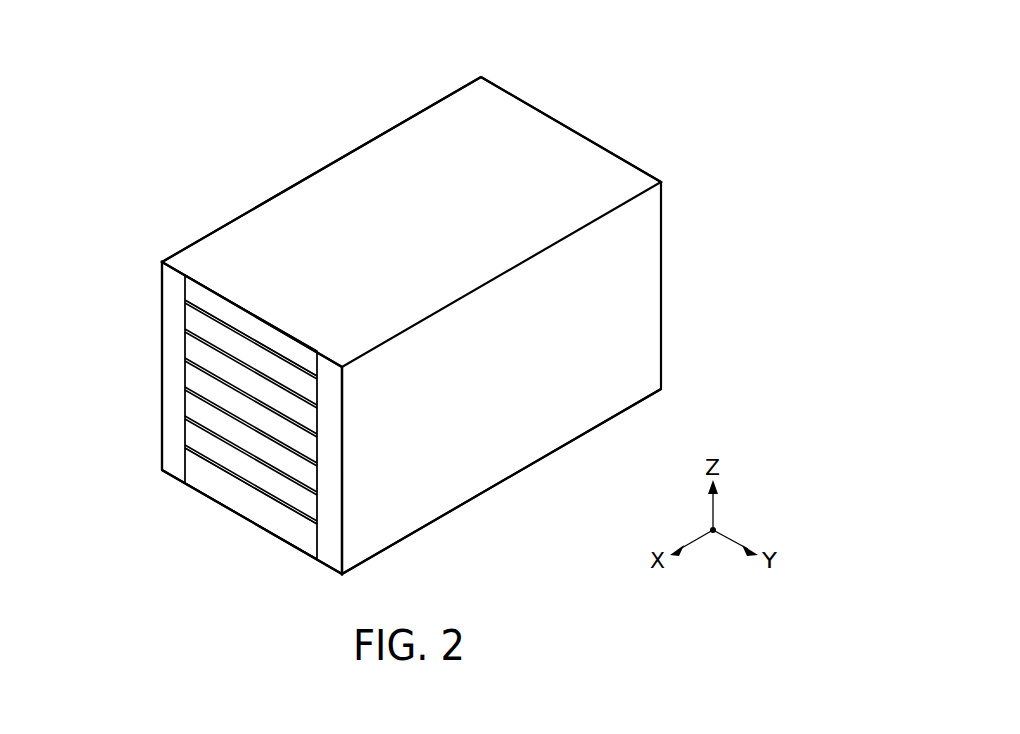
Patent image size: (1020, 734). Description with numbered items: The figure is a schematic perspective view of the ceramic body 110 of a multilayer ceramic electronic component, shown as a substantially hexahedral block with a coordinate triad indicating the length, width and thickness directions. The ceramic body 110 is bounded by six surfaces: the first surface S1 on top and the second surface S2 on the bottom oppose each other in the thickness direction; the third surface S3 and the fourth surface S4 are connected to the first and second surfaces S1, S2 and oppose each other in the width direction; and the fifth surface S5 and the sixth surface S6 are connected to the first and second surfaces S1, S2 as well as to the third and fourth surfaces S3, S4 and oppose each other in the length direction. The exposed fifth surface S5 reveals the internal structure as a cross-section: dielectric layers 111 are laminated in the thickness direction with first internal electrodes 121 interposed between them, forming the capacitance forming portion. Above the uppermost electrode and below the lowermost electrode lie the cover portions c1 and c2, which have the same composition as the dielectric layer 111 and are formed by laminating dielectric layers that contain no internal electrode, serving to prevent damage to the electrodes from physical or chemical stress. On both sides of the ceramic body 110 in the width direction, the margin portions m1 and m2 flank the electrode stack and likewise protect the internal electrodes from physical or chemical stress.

The ceramic body 110 is at (246, 33).
The dielectric layer 111 is at (197, 378).
The first internal electrode 121 is at (213, 320).
The first surface S1 is at (410, 148).
The second surface S2 is at (465, 480).
The third surface S3 is at (566, 405).
The fourth surface S4 is at (259, 225).
The fifth surface S5 is at (228, 476).
The sixth surface S6 is at (578, 152).
The cover portion c1 is at (187, 292).
The cover portion c2 is at (277, 525).
The margin portion m1 is at (178, 466).
The margin portion m2 is at (334, 558).